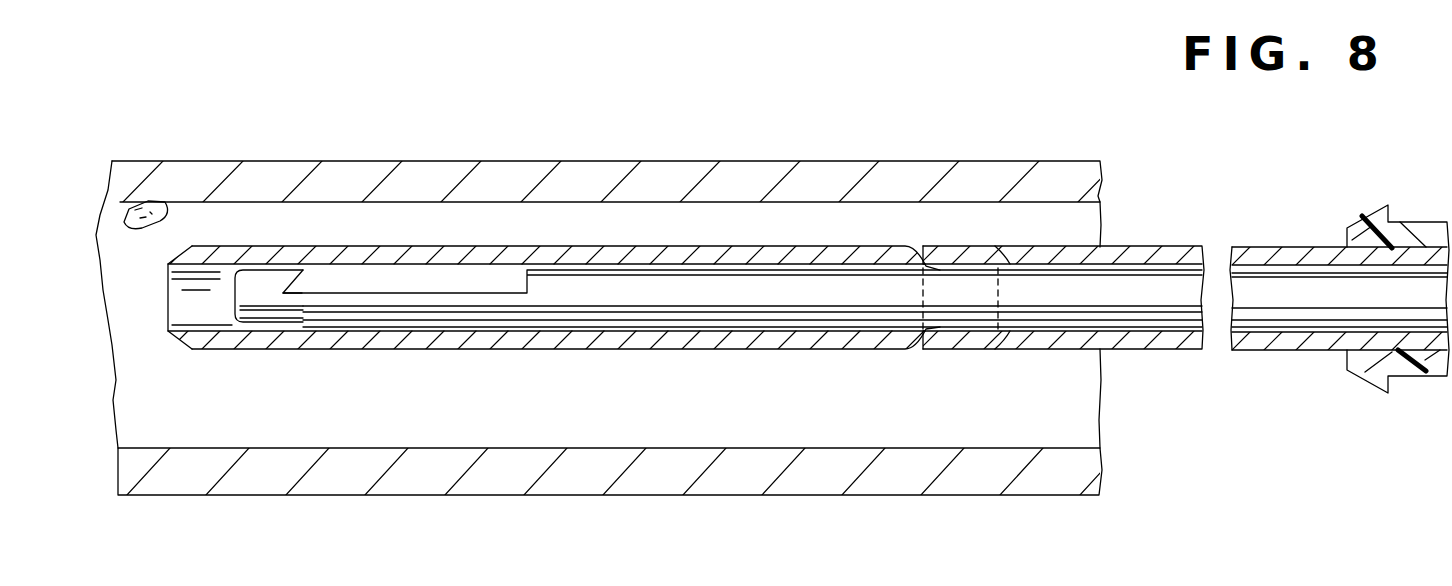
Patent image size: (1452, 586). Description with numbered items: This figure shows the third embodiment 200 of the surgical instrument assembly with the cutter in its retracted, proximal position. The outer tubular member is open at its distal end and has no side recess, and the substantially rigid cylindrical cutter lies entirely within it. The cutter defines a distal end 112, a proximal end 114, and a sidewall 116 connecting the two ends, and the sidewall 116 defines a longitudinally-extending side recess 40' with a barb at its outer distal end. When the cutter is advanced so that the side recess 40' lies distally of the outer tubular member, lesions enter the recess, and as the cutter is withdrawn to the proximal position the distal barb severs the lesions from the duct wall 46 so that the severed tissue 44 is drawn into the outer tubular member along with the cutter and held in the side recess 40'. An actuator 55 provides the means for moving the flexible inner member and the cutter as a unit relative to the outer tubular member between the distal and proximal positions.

The third embodiment 200 is at (760, 228).
The tissue 44 is at (168, 213).
The duct wall 46 is at (612, 496).
The sidewall 116 is at (617, 319).
The distal end 112 is at (232, 293).
The side recess 40' is at (318, 331).
The proximal end 114 is at (997, 295).
The actuator 55 is at (1426, 222).